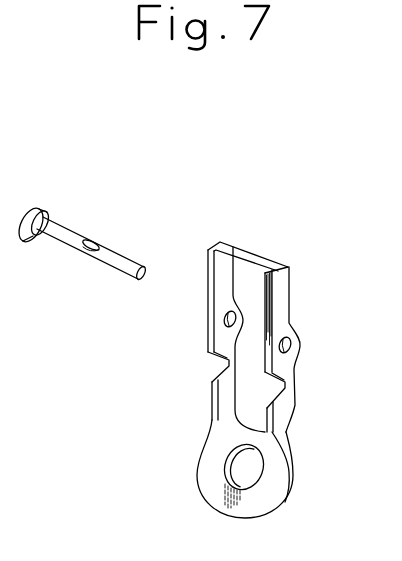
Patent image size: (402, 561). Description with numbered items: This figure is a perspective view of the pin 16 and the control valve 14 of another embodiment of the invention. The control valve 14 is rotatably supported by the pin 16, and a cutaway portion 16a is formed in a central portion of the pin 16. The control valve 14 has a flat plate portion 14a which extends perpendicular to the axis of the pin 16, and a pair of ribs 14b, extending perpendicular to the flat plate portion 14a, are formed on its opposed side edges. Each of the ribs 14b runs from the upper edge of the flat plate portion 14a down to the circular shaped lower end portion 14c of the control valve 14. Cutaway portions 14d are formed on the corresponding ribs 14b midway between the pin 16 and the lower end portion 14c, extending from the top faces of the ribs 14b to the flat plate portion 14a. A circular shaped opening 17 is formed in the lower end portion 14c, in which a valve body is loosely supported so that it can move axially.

The control valve 14 is at (256, 367).
The flat plate portion 14a is at (244, 261).
The ribs 14b is at (223, 277).
The circular shaped lower end portion 14c is at (264, 476).
The cutaway portions 14d is at (218, 361).
The pin 16 is at (80, 221).
The cutaway portion 16a is at (96, 240).
The circular shaped opening 17 is at (228, 480).